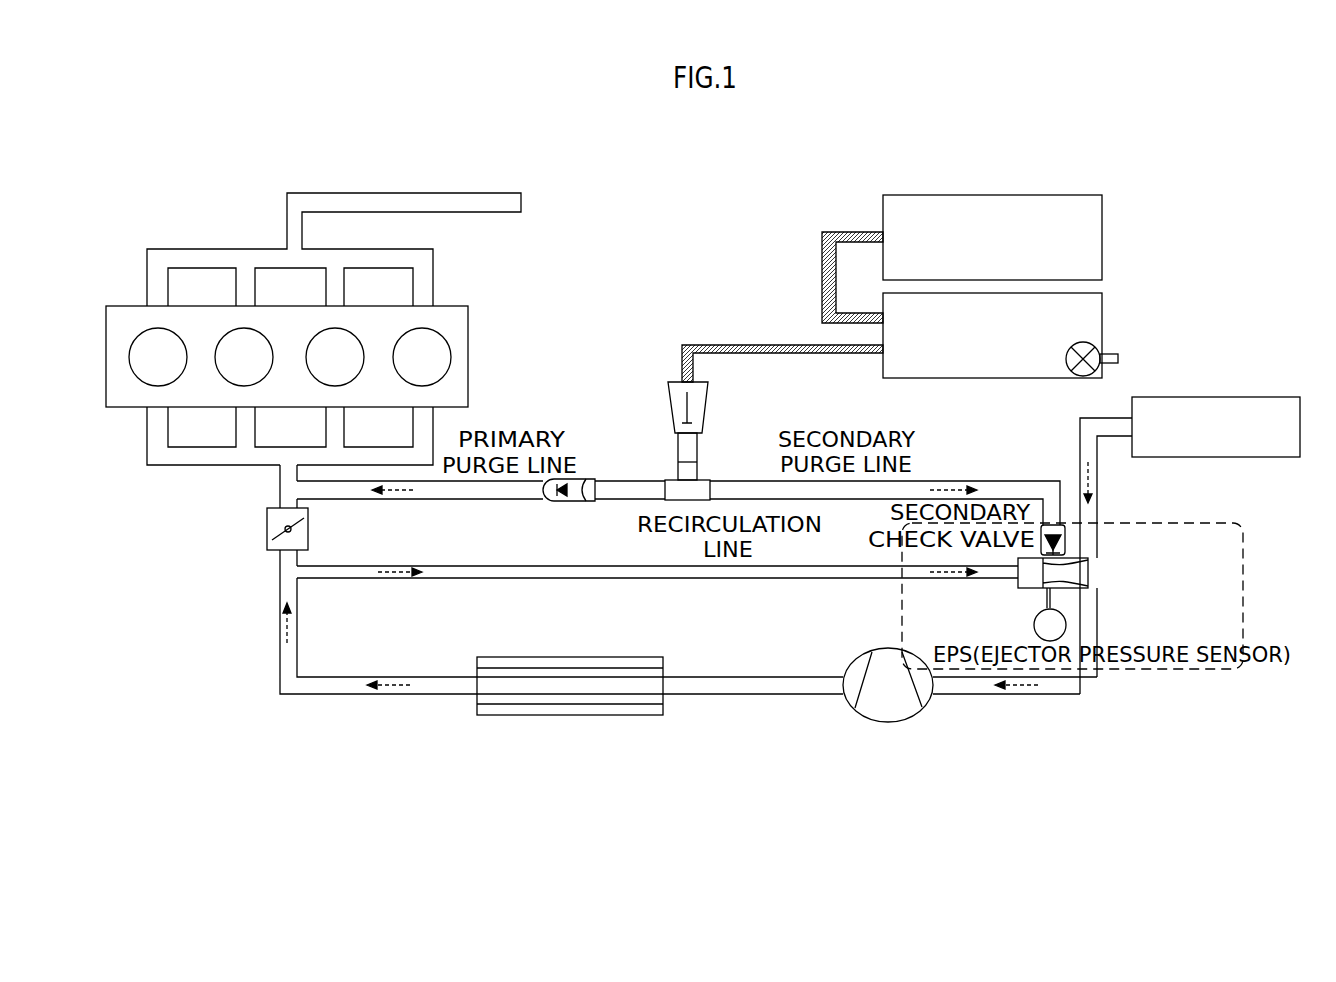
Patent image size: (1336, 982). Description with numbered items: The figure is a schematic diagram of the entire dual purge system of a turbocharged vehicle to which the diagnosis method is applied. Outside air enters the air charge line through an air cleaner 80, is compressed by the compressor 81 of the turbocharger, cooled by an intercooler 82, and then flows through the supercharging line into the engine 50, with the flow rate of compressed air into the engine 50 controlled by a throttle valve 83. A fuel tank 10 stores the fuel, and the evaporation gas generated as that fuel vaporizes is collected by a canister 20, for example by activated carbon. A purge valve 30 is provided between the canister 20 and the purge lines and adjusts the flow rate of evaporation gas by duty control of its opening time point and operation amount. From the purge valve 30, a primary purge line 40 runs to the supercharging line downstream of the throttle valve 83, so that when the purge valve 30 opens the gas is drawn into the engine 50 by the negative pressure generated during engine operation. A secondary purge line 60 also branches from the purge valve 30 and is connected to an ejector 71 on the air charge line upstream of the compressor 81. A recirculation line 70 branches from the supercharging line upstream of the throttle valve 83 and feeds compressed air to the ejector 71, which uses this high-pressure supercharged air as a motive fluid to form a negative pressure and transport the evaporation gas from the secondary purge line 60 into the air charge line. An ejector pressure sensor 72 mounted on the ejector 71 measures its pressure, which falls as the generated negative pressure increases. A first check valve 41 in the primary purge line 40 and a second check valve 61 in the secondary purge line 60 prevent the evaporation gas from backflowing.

The fuel tank 10 is at (1103, 238).
The canister 20 is at (1103, 318).
The purge valve 30 is at (670, 398).
The primary purge line 40 is at (620, 480).
The first check valve 41 is at (577, 501).
The engine 50 is at (401, 193).
The secondary purge line 60 is at (992, 480).
The second check valve 61 is at (1066, 541).
The recirculation line 70 is at (709, 580).
The ejector 71 is at (1090, 588).
The ejector pressure sensor 72 is at (1034, 620).
The air cleaner 80 is at (1248, 397).
The compressor 81 is at (927, 704).
The intercooler 82 is at (645, 716).
The throttle valve 83 is at (270, 553).